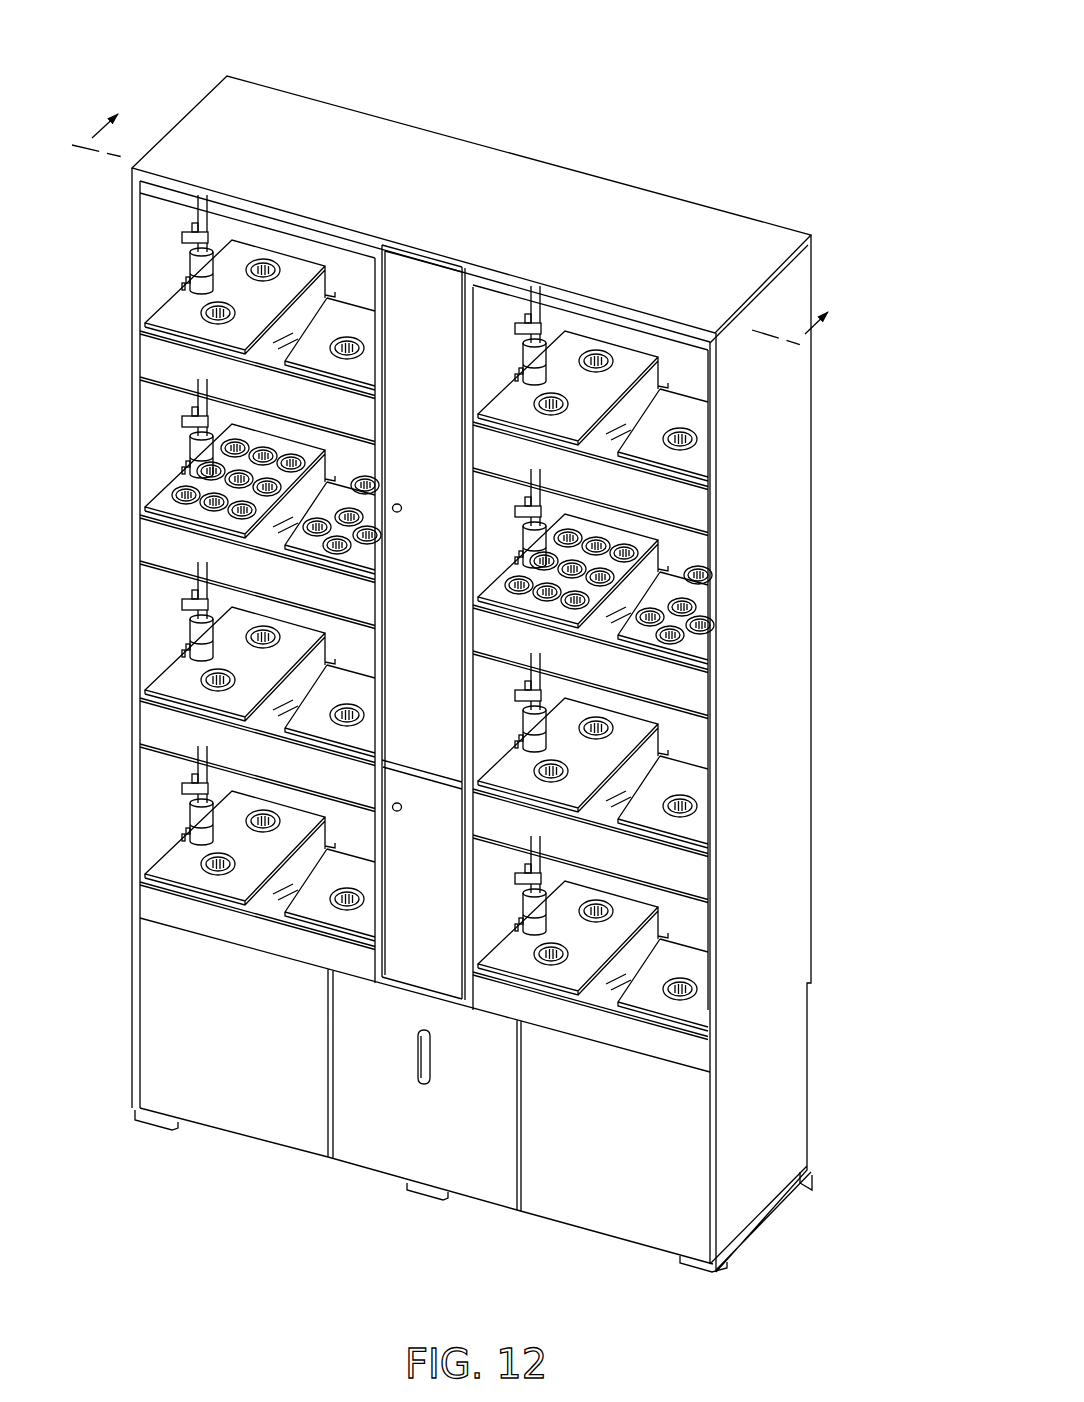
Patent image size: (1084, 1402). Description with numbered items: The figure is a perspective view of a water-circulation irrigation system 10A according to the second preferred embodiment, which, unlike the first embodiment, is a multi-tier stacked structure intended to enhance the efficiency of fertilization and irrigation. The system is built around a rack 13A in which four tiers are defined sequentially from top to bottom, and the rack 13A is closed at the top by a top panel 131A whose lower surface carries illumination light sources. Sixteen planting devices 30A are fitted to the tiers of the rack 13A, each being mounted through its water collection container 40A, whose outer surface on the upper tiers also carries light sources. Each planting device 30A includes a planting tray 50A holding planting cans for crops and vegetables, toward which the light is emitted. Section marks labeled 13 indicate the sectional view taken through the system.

The water-circulation irrigation system 10A is at (574, 100).
The top panel 131A is at (260, 112).
The rack 13A is at (792, 231).
The section line 13 is at (466, 215).
The planting device 30A is at (168, 297).
The water collection container 40A is at (664, 560).
The planting tray 50A is at (663, 527).